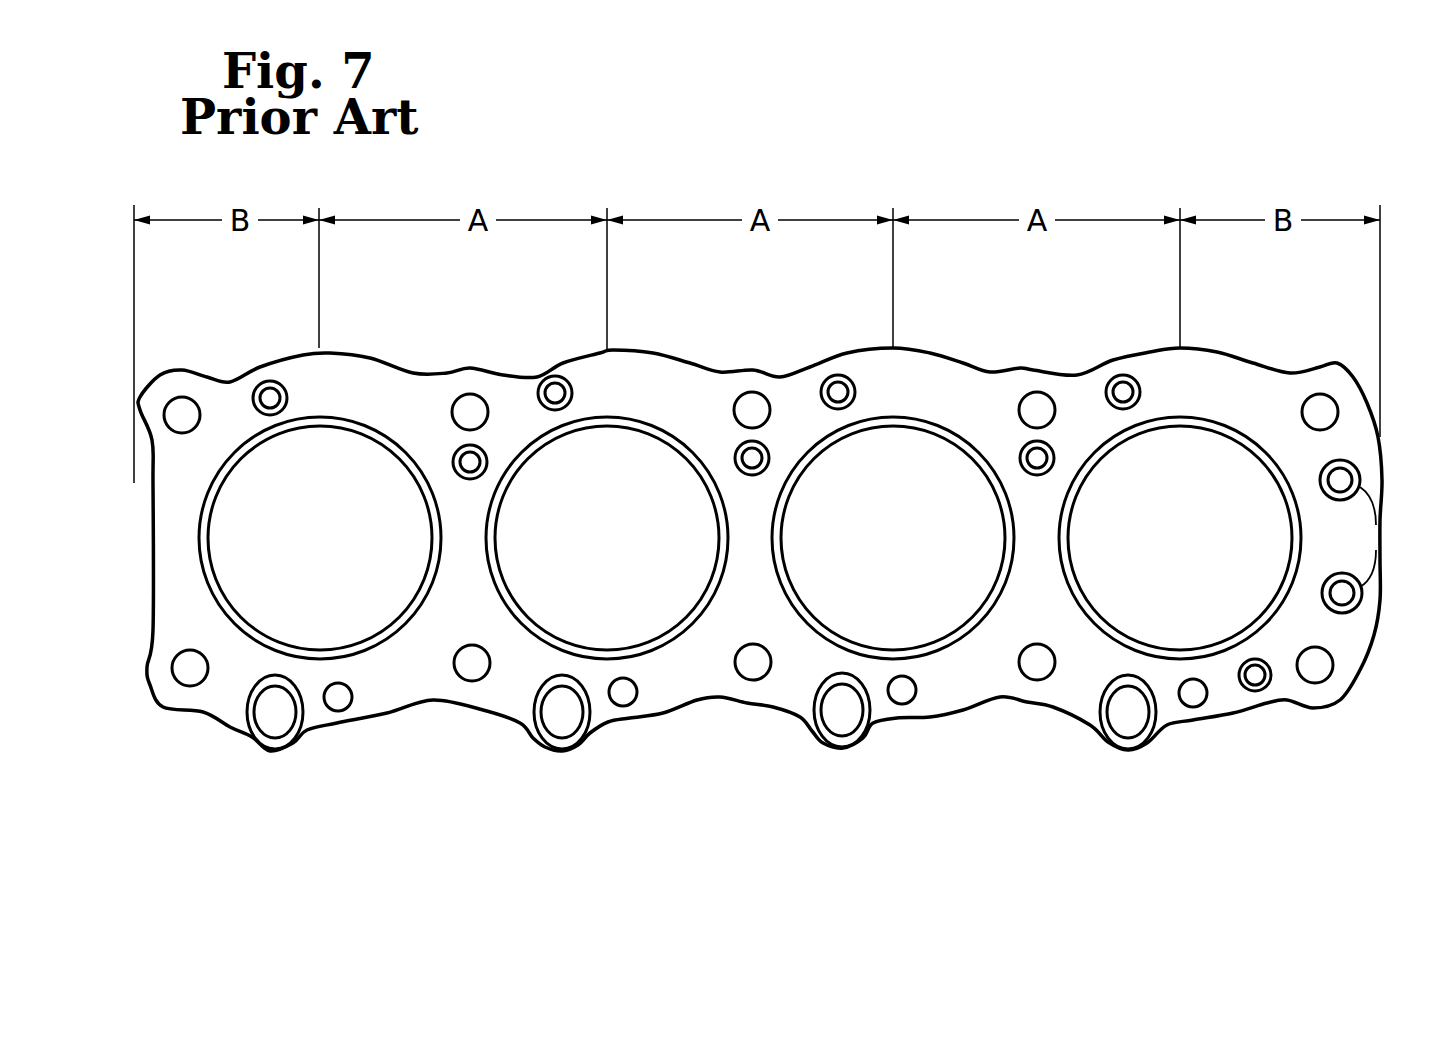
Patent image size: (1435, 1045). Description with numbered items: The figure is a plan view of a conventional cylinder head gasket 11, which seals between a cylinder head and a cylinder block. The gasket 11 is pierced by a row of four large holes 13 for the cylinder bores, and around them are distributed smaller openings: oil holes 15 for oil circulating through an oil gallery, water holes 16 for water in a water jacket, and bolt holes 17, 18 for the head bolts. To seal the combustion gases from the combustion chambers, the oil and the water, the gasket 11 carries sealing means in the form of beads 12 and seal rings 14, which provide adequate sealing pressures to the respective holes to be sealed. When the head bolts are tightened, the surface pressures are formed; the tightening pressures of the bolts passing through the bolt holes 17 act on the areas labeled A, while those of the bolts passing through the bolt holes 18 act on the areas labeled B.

The cylinder head gasket 11 is at (493, 745).
The beads 12 is at (543, 637).
The holes for the cylinder bores 13 is at (302, 551).
The seal rings 14 is at (470, 460).
The oil holes 15 is at (285, 720).
The water holes 16 is at (265, 395).
The bolt holes 17 is at (471, 410).
The bolt holes 18 is at (178, 418).